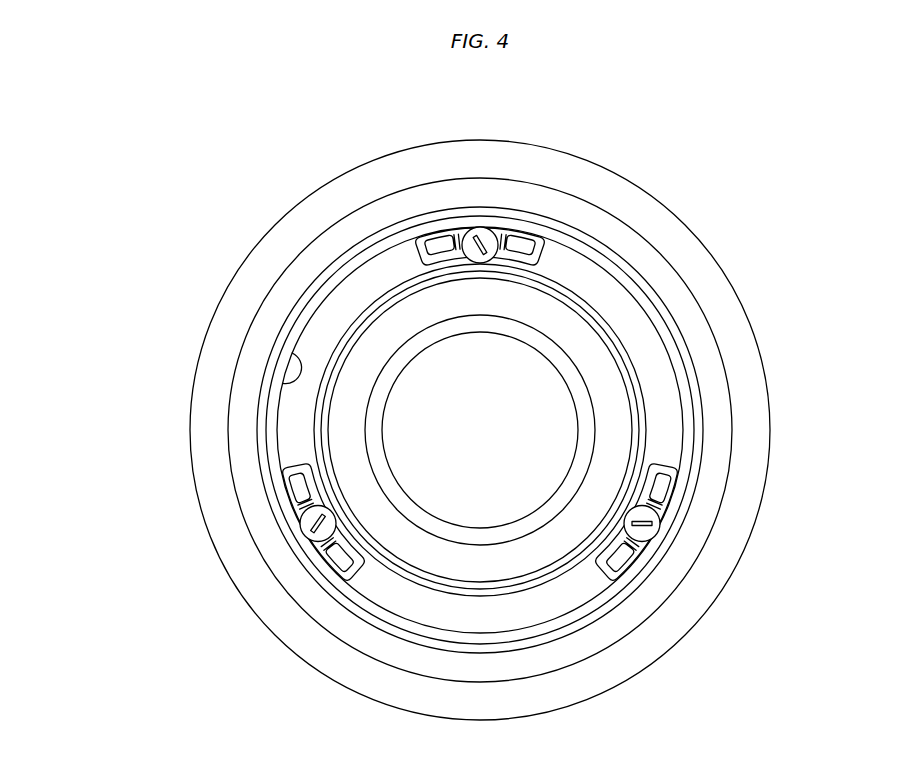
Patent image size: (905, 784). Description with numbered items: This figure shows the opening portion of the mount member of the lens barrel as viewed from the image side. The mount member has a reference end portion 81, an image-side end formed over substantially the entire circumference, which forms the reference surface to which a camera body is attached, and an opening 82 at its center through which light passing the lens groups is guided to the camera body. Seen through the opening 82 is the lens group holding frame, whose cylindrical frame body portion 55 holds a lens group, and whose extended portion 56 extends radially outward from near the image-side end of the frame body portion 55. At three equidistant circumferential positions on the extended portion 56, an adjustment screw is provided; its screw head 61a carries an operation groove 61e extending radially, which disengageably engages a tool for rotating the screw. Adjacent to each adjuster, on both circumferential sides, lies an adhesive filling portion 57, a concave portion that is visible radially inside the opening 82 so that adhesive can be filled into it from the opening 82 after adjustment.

The frame body portion 55 is at (585, 297).
The extended portion 56 is at (337, 313).
The adhesive filling portion 57 is at (442, 232).
The screw head 61a is at (428, 257).
The operation groove 61e is at (484, 227).
The reference end portion 81 is at (205, 432).
The opening 82 is at (292, 354).